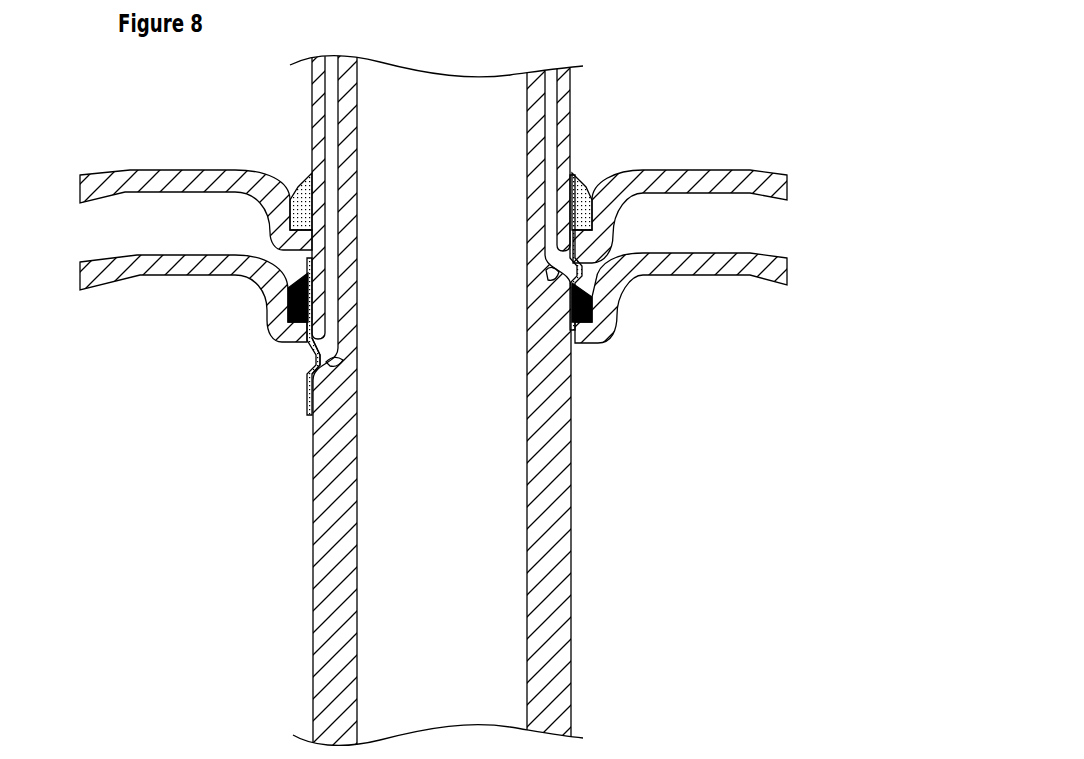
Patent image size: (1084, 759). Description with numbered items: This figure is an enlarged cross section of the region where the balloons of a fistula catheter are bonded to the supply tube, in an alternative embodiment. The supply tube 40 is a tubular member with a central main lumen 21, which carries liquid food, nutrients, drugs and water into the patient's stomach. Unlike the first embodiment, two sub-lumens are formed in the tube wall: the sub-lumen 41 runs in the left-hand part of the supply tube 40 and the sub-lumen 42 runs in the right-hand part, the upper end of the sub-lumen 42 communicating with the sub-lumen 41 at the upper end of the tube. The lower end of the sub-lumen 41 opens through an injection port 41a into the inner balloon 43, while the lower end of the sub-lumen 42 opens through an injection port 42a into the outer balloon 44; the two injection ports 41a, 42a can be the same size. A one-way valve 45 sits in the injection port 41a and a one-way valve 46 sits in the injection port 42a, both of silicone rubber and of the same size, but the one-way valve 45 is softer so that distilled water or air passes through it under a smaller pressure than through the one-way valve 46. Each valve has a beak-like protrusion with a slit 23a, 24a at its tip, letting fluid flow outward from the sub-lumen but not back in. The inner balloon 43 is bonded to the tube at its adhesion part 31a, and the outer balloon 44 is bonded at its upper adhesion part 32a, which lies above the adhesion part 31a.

The supply tube 40 is at (572, 570).
The main lumen 21 is at (456, 153).
The sub-lumen 41 is at (328, 104).
The sub-lumen 42 is at (551, 101).
The injection port 41a is at (338, 359).
The injection port 42a is at (552, 276).
The inner balloon 43 is at (752, 258).
The outer balloon 44 is at (752, 177).
The one-way valve 45 is at (307, 368).
The one-way valve 46 is at (577, 263).
The slit 23a is at (300, 354).
The slit 24a is at (588, 290).
The adhesion part 31a is at (297, 272).
The upper adhesion part 32a is at (291, 184).